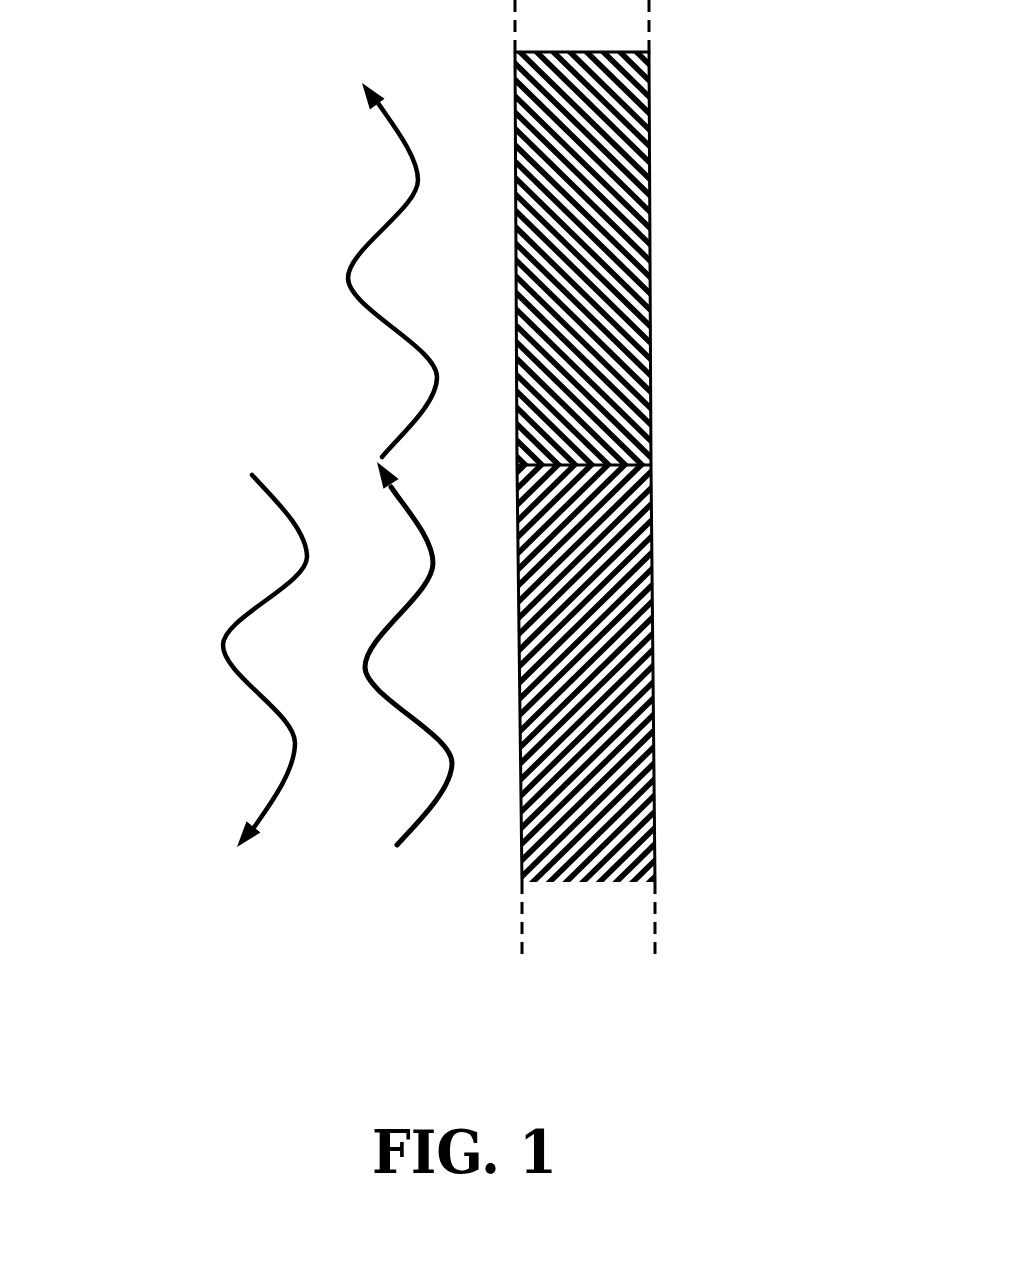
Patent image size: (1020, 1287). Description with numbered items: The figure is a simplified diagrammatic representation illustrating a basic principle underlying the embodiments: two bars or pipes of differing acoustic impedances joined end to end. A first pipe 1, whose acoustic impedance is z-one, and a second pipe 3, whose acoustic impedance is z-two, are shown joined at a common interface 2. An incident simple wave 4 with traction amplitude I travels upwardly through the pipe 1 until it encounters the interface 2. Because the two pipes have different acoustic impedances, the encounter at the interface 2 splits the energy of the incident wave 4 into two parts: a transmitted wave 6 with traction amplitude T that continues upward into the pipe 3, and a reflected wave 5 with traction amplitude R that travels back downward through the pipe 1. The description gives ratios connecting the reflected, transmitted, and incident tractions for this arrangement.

The pipe 1 is at (658, 625).
The common interface 2 is at (652, 463).
The pipe 3 is at (652, 257).
The incident simple wave 4 is at (373, 480).
The reflected wave 5 is at (303, 562).
The transmitted wave 6 is at (405, 195).